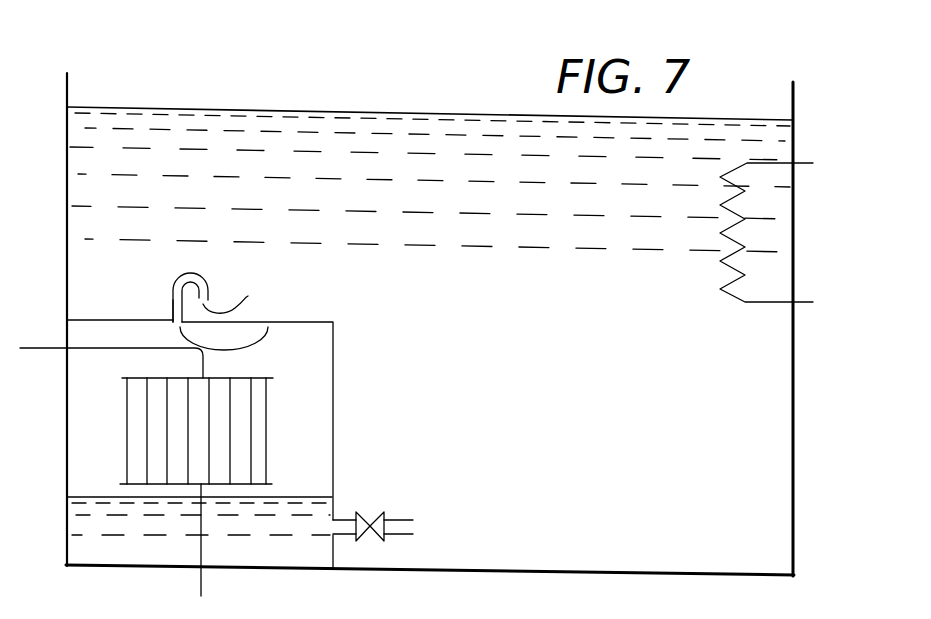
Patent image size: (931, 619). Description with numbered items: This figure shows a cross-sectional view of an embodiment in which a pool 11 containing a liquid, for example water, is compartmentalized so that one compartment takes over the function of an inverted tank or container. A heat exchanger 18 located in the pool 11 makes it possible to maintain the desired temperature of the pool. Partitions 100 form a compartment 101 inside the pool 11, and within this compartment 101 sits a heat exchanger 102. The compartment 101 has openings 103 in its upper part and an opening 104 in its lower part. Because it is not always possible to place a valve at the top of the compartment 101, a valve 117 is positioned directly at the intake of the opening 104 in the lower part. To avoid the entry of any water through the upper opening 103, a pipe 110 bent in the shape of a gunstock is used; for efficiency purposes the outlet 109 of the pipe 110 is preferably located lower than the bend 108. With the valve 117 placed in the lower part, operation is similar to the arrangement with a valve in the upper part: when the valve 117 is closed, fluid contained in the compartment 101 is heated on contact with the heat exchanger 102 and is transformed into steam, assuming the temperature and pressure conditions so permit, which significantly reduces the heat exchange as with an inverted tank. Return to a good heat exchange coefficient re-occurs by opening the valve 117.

The pool 11 is at (67, 180).
The heat exchanger 18 is at (720, 238).
The partitions 100 is at (335, 345).
The compartment 101 is at (313, 395).
The heat exchanger 102 is at (273, 440).
The openings 103 is at (268, 327).
The opening 104 is at (310, 523).
The bend 108 is at (194, 273).
The outlet 109 is at (244, 294).
The pipe 110 is at (173, 310).
The valve 117 is at (385, 540).